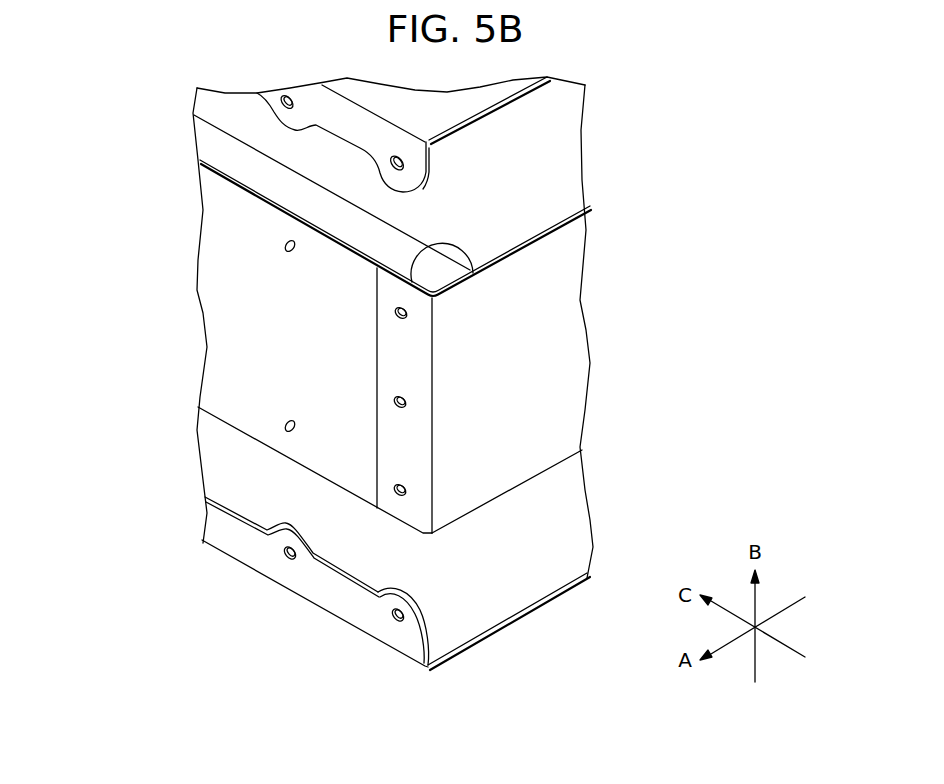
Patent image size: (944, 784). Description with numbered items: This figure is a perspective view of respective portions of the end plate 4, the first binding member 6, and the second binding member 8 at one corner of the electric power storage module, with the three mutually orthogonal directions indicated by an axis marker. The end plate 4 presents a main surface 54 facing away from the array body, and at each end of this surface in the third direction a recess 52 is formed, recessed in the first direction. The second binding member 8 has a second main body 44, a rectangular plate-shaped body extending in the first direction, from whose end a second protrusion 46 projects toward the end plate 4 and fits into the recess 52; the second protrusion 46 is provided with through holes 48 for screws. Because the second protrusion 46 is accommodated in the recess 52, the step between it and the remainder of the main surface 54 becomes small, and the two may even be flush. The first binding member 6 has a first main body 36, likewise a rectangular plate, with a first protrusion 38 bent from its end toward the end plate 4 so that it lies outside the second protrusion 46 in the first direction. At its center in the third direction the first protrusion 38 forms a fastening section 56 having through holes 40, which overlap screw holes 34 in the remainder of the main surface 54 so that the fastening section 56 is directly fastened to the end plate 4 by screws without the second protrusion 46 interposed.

The end plate 4 is at (225, 422).
The first binding member 6 is at (512, 110).
The second binding member 8 is at (540, 482).
The screw hole 34 is at (290, 433).
The first main body 36 is at (520, 581).
The first protrusion 38 is at (433, 164).
The through hole 40 is at (283, 558).
The second main body 44 is at (553, 418).
The second protrusion 46 is at (413, 510).
The through hole 48 is at (393, 497).
The recess 52 is at (442, 245).
The main surface 54 is at (233, 318).
The fastening section 56 is at (333, 598).